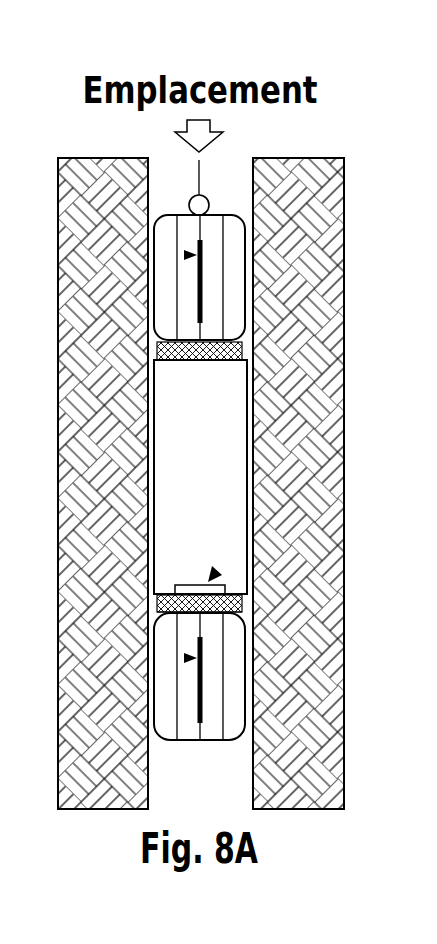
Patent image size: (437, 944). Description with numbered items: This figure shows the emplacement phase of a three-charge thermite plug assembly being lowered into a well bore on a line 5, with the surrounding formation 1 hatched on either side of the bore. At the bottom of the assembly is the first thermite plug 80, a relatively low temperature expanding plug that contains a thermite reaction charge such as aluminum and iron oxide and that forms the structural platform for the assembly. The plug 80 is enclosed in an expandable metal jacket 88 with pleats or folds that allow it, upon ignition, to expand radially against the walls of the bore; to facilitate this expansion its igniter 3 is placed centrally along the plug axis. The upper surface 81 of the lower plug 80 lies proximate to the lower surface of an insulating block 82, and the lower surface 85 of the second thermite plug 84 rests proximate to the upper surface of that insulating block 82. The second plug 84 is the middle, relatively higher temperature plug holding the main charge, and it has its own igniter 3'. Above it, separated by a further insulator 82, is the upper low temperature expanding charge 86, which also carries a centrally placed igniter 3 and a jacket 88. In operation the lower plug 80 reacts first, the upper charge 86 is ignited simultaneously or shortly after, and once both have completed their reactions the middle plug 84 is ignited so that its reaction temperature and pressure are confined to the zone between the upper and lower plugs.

The geological formation 1 is at (58, 417).
The igniter 3 is at (108, 481).
The igniter 3' is at (300, 542).
The cable 5 is at (200, 178).
The first thermite plug 80 is at (245, 675).
The upper surface 81 is at (157, 605).
The insulating block 82 is at (256, 347).
The second thermite plug 84 is at (230, 438).
The lower surface 85 is at (157, 602).
The upper low temperature expanding charge 86 is at (245, 253).
The expandable metal jacket 88 is at (152, 290).